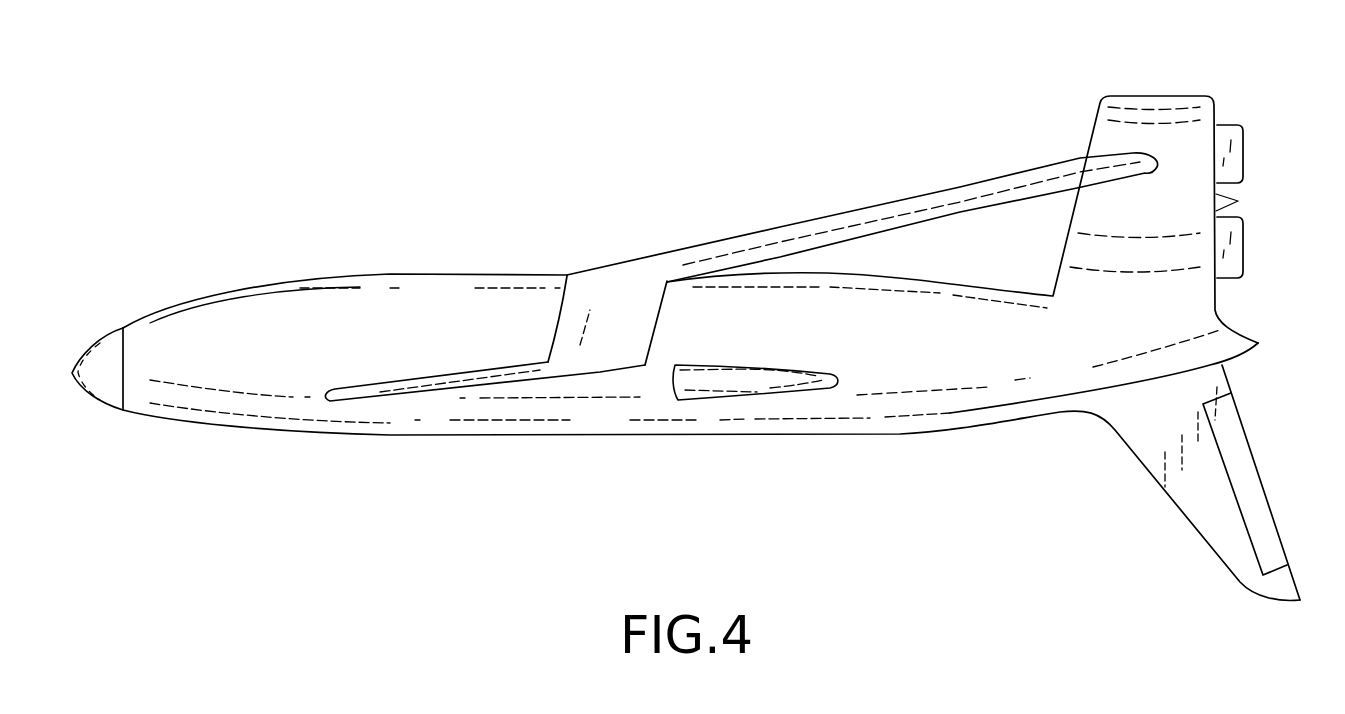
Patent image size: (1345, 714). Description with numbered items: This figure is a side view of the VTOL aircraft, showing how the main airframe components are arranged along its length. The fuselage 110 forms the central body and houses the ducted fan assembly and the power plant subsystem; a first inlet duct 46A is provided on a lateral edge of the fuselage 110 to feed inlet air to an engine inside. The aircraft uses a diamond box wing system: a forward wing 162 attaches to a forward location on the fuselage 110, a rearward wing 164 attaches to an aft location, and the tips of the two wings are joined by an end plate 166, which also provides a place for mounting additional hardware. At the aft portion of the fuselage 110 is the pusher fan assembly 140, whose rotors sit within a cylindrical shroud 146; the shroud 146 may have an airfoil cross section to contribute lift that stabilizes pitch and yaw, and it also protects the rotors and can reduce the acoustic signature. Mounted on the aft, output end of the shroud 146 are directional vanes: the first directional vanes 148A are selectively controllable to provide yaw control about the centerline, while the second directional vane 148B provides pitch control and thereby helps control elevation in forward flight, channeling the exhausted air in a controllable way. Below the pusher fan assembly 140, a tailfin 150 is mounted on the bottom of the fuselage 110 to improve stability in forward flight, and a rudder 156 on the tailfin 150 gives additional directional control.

The fuselage 110 is at (236, 363).
The forward wing 162 is at (400, 382).
The end plate 166 is at (650, 330).
The rearward wing 164 is at (827, 232).
The first inlet duct 46A is at (713, 392).
The pusher fan assembly 140 is at (1160, 317).
The shroud 146 is at (1150, 112).
The first directional vanes 148A is at (1243, 135).
The second directional vane 148B is at (1243, 200).
The tailfin 150 is at (1211, 482).
The rudder 156 is at (1243, 467).